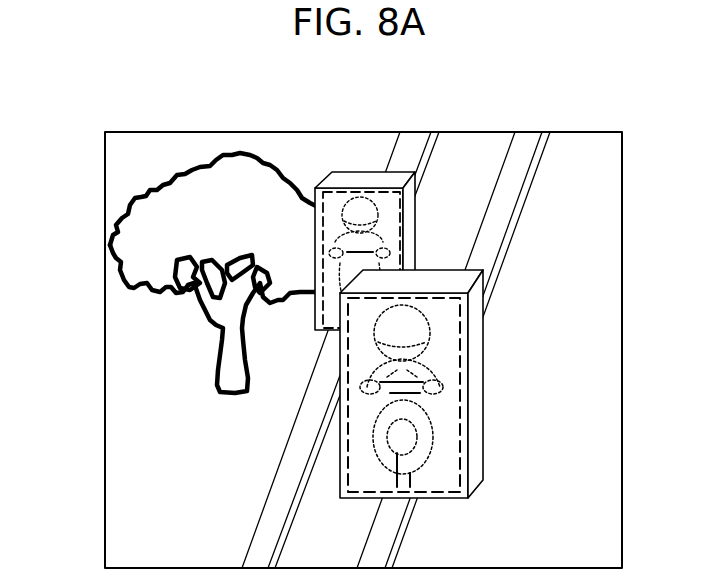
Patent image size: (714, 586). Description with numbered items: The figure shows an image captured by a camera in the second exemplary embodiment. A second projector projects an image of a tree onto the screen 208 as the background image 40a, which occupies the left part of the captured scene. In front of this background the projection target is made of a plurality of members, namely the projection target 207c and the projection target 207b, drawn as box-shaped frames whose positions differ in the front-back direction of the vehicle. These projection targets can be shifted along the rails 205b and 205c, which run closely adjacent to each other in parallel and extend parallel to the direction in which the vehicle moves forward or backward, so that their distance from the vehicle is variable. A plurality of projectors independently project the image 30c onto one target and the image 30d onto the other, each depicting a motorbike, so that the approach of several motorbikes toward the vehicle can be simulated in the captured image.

The screen 208 is at (318, 132).
The projection target 207c is at (360, 172).
The projection target 207b is at (485, 377).
The image 30c is at (320, 302).
The image 30d is at (443, 467).
The rail 205b is at (512, 197).
The rail 205c is at (291, 466).
The background image 40a is at (170, 209).